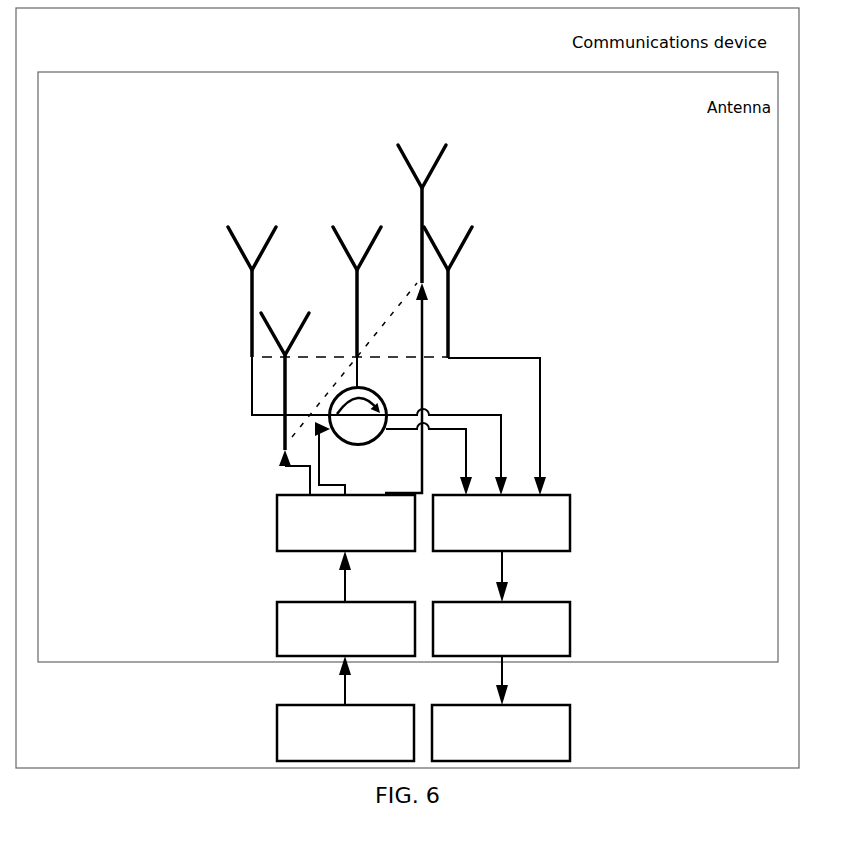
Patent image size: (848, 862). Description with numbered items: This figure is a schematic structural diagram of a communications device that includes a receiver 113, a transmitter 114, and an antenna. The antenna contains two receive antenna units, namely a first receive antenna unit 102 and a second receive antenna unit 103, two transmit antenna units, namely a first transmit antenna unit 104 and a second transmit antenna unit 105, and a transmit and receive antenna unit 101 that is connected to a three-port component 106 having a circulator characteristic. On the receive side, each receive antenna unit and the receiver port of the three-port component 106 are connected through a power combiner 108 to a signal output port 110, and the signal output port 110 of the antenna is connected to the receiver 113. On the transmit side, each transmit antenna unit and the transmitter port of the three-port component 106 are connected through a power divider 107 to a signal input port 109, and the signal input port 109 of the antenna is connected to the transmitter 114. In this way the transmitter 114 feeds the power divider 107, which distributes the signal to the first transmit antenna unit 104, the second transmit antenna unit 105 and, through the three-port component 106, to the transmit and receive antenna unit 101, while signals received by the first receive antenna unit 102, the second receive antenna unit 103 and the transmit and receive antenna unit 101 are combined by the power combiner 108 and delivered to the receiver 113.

The transmit and receive antenna unit 101 is at (383, 227).
The first receive antenna unit 102 is at (240, 252).
The second receive antenna unit 103 is at (470, 238).
The first transmit antenna unit 104 is at (437, 170).
The second transmit antenna unit 105 is at (273, 338).
The three-port component 106 is at (393, 442).
The power divider 107 is at (277, 530).
The power combiner 108 is at (570, 530).
The signal input port 109 is at (277, 628).
The signal output port 110 is at (570, 628).
The receiver 113 is at (570, 728).
The transmitter 114 is at (277, 735).